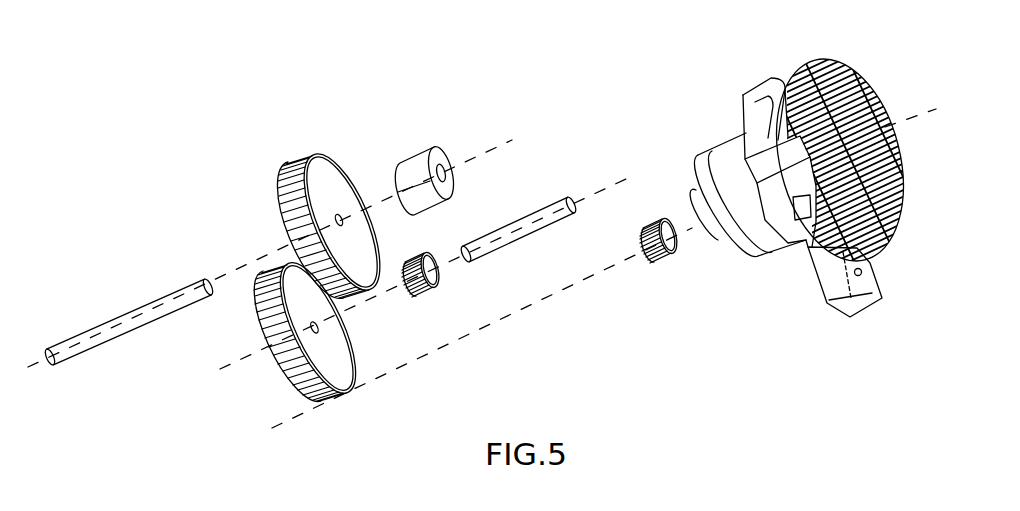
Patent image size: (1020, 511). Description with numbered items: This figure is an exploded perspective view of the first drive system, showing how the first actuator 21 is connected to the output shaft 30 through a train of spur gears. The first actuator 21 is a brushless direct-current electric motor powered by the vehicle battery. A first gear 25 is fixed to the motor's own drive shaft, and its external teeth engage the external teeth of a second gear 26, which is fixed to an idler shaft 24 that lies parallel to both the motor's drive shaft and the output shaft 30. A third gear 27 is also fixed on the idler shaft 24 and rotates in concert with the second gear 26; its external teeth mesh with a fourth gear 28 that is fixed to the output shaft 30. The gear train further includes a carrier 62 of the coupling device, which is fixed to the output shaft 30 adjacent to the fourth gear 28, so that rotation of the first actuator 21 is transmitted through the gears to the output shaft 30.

The first actuator 21 is at (750, 93).
The idler shaft 24 is at (520, 217).
The first gear 25 is at (663, 260).
The second gear 26 is at (348, 395).
The third gear 27 is at (423, 294).
The fourth gear 28 is at (328, 178).
The output shaft 30 is at (170, 298).
The carrier 62 is at (410, 158).